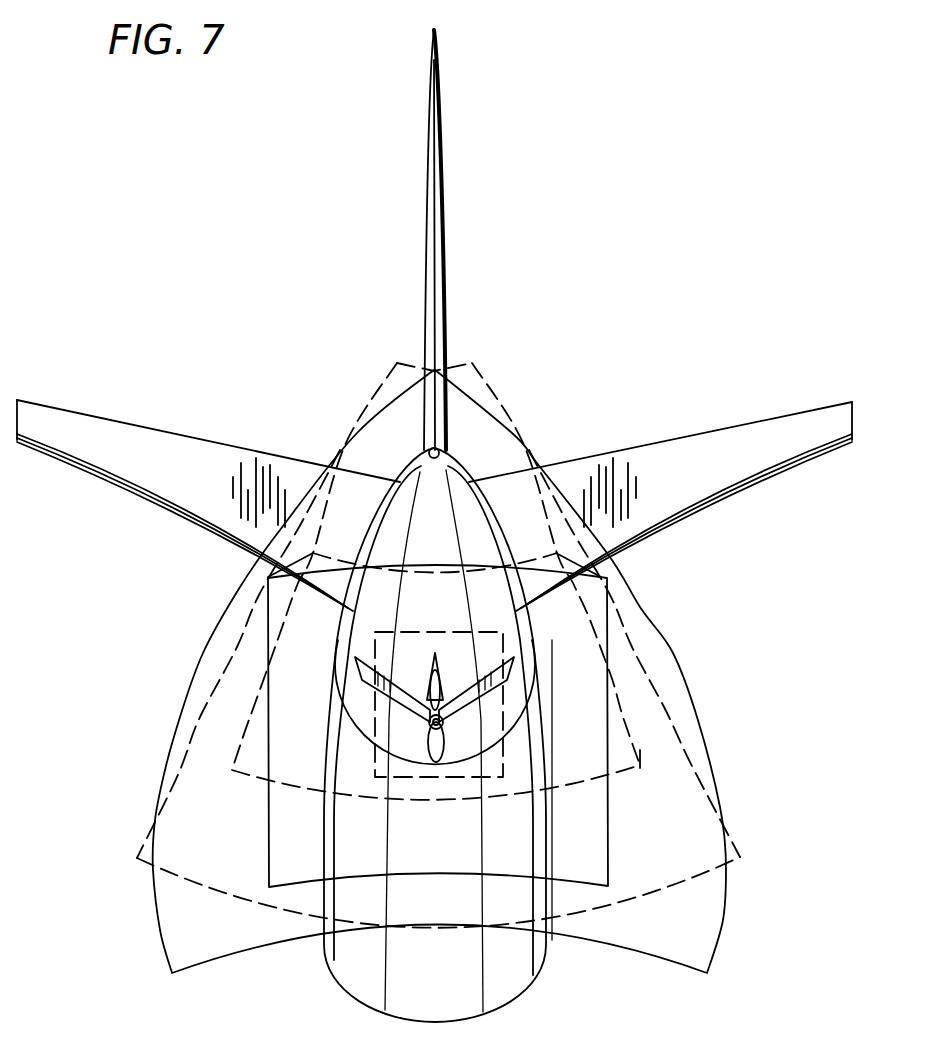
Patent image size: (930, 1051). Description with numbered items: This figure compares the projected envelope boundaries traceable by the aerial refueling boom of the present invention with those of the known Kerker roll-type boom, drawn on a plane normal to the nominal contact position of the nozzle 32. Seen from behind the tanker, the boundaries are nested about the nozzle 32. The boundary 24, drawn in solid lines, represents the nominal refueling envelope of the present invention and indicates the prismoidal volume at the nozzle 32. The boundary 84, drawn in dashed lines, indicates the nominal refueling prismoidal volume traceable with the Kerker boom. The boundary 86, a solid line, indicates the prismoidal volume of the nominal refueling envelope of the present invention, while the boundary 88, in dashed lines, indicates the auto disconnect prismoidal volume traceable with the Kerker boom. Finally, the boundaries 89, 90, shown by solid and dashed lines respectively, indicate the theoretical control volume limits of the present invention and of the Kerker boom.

The nominal refueling contact envelope 24 is at (453, 777).
The nozzle 32 is at (500, 742).
The boundary 84 is at (465, 635).
The boundary 86 is at (268, 810).
The boundary 88 is at (641, 757).
The boundary 89 is at (223, 895).
The boundary 90 is at (673, 653).